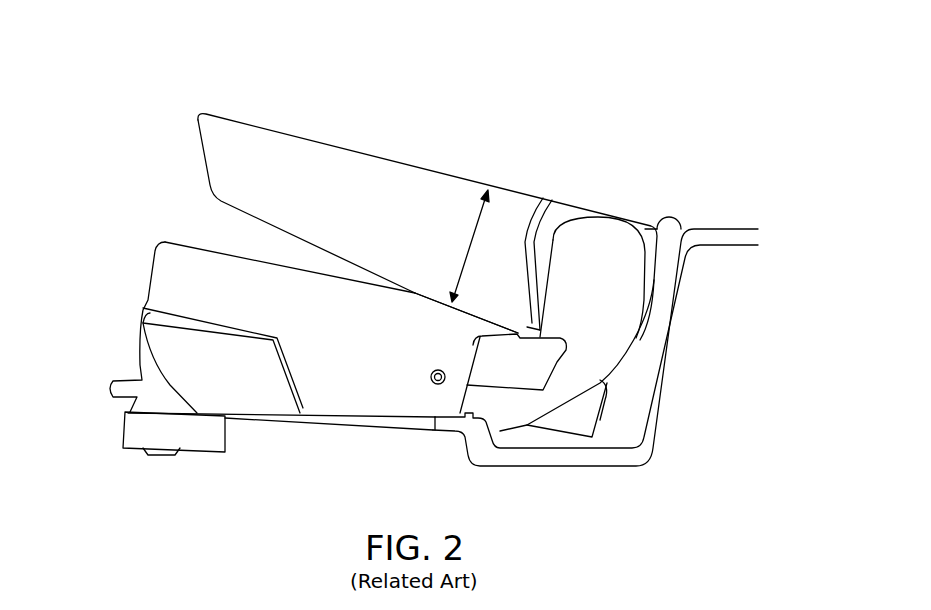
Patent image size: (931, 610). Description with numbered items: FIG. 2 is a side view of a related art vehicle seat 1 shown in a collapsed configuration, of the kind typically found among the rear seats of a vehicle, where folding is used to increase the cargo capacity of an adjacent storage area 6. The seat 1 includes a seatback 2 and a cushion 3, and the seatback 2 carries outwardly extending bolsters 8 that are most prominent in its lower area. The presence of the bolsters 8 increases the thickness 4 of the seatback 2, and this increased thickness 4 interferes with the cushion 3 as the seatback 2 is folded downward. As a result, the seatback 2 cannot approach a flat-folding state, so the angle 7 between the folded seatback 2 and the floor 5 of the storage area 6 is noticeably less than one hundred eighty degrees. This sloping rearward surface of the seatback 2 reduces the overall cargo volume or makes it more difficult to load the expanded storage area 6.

The vehicle seat 1 is at (304, 80).
The seatback 2 is at (379, 176).
The cushion 3 is at (158, 277).
The thickness 4 is at (474, 232).
The floor 5 is at (753, 229).
The storage area 6 is at (805, 161).
The angle 7 is at (675, 217).
The bolsters 8 is at (428, 268).